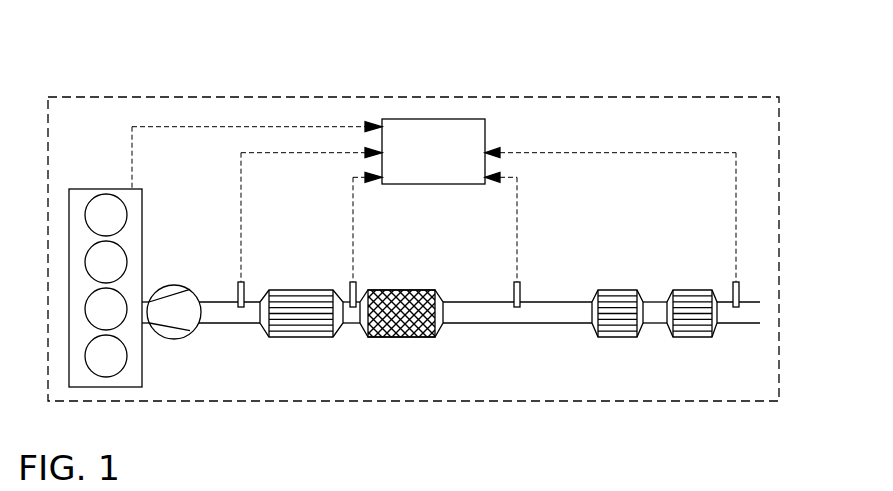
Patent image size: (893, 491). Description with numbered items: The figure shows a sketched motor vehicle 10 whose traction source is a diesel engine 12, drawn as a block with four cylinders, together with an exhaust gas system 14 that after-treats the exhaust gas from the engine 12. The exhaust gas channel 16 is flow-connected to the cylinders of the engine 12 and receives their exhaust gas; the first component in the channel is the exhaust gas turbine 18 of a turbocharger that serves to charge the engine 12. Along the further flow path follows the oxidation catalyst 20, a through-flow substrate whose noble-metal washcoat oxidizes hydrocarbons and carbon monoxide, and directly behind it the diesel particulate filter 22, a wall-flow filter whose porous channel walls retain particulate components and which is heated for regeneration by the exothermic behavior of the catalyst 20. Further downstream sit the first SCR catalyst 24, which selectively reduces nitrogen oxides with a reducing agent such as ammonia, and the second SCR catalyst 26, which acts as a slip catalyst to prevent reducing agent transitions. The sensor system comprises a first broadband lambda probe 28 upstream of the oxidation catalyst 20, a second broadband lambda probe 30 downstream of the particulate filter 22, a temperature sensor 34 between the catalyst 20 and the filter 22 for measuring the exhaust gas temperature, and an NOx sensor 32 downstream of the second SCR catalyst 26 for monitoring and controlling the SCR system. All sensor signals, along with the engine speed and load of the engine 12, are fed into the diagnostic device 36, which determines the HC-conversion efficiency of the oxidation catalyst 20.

The motor vehicle 10 is at (161, 97).
The diesel engine 12 is at (106, 198).
The exhaust gas system 14 is at (637, 225).
The exhaust gas channel 16 is at (229, 318).
The exhaust gas turbine 18 is at (175, 289).
The oxidation catalyst 20 is at (287, 332).
The diesel particulate filter 22 is at (396, 332).
The first SCR catalyst 24 is at (617, 332).
The second SCR catalyst 26 is at (693, 332).
The first broadband lambda probe 28 is at (244, 288).
The second broadband lambda probe 30 is at (521, 288).
The NOx sensor 32 is at (738, 288).
The temperature sensor 34 is at (356, 288).
The diagnostic device 36 is at (449, 118).